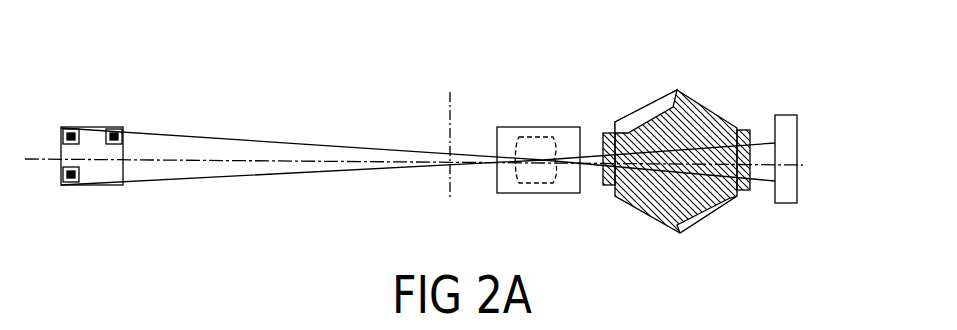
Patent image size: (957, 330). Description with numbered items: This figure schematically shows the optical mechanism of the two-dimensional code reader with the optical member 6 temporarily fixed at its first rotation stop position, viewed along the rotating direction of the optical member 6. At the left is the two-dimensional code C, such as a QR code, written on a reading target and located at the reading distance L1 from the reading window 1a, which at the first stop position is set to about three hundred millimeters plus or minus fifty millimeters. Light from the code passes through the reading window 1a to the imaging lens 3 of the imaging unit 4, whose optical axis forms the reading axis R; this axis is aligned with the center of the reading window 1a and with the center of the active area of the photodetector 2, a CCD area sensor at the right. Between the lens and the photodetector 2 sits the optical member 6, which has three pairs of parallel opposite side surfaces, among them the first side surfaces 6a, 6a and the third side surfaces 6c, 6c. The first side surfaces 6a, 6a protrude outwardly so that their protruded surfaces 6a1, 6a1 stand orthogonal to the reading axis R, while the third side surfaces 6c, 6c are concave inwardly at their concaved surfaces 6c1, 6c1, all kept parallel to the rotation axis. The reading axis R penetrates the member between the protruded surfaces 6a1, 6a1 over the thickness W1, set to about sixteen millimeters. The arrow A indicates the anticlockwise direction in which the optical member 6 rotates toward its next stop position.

The two-dimensional code C is at (97, 182).
The reading distance L1 is at (450, 104).
The reading window 1a is at (450, 187).
The imaging lens 3 is at (543, 127).
The imaging unit 4 is at (577, 66).
The optical member 6 is at (697, 103).
The first side surfaces 6a is at (609, 120).
The protruded surfaces 6a1 is at (603, 133).
The third side surfaces 6c is at (733, 208).
The concaved surfaces 6c1 is at (673, 231).
The arrow A is at (633, 248).
The thickness W1 is at (603, 190).
The photodetector 2 is at (797, 204).
The reading axis R is at (803, 165).